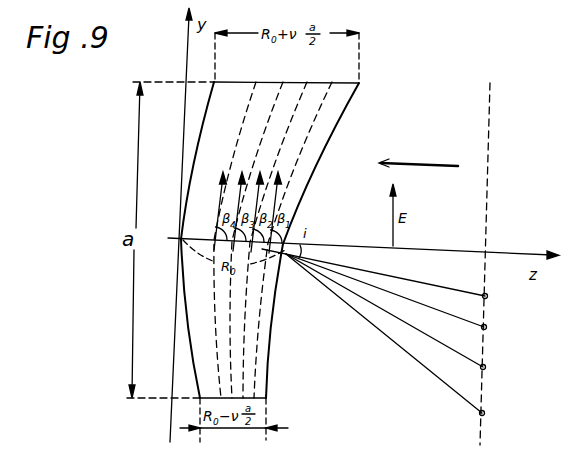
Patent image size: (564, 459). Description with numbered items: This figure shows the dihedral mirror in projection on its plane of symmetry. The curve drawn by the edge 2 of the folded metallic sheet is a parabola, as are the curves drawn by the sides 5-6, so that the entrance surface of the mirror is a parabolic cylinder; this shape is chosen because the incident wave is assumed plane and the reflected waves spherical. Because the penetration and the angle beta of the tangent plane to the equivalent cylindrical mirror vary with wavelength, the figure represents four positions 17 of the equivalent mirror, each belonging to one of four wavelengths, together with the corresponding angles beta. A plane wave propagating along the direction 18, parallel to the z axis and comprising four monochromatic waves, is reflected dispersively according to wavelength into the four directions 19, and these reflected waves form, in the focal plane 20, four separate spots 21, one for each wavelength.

The edge 2 is at (201, 126).
The sides 5-6 is at (329, 143).
The positions of the equivalent mirror 17 is at (338, 78).
The direction of propagation 18 is at (405, 165).
The reflection directions 19 is at (417, 283).
The focal plane 20 is at (492, 108).
The spots 21 is at (488, 297).